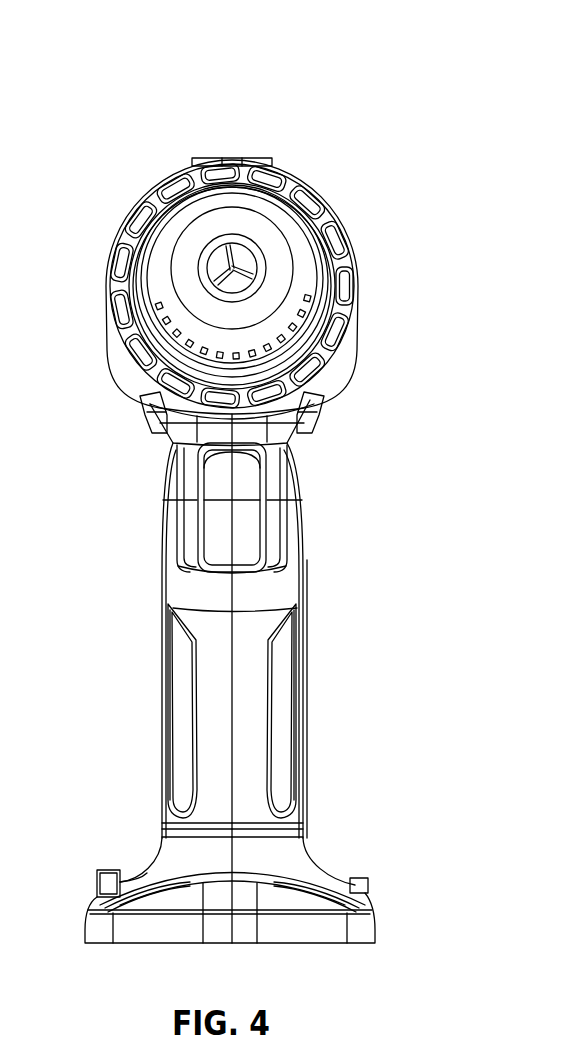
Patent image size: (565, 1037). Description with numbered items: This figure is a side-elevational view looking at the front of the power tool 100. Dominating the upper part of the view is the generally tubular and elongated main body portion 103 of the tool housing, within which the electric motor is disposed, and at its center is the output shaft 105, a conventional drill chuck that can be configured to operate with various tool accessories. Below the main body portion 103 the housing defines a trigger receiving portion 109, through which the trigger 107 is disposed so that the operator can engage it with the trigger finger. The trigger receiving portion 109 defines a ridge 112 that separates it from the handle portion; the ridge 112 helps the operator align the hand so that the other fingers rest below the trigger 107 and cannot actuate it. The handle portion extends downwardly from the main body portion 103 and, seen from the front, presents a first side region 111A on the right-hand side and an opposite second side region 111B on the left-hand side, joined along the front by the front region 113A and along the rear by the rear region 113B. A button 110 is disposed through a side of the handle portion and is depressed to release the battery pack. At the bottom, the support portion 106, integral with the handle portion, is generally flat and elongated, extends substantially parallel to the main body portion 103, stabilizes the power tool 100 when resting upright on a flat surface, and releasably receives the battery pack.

The power tool 100 is at (266, 124).
The main body portion 103 is at (300, 175).
The output shaft 105 is at (183, 263).
The trigger 107 is at (235, 520).
The trigger receiving portion 109 is at (162, 413).
The ridge 112 is at (298, 572).
The first side region 111A is at (146, 770).
The second side region 111B is at (321, 766).
The front region 113A is at (207, 627).
The rear region 113B is at (148, 701).
The button 110 is at (100, 880).
The support portion 106 is at (380, 900).